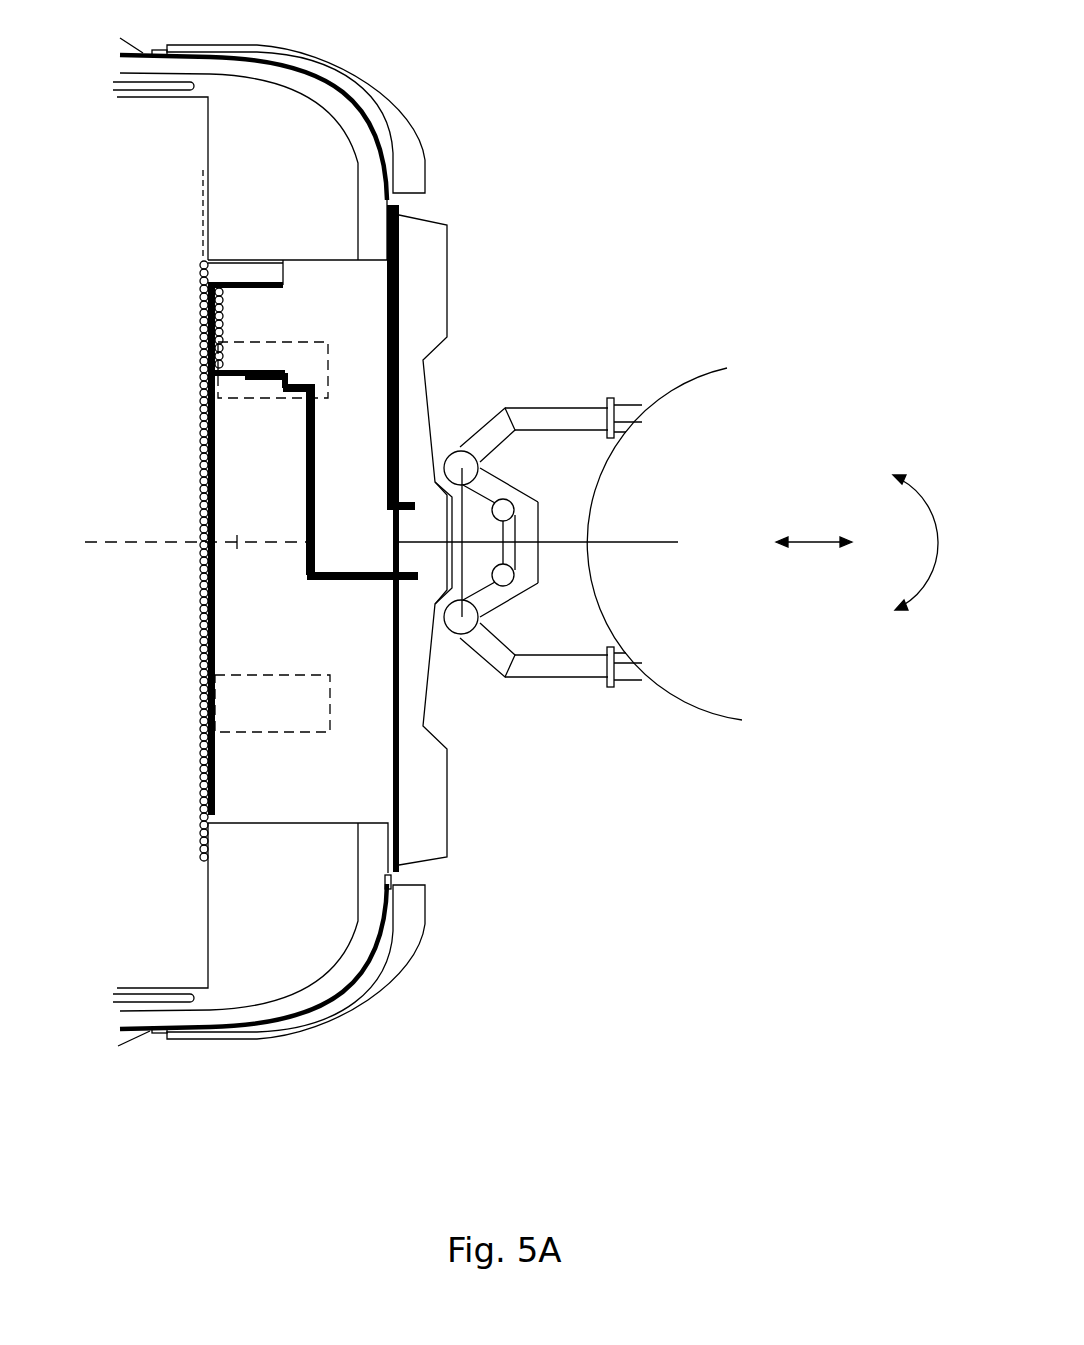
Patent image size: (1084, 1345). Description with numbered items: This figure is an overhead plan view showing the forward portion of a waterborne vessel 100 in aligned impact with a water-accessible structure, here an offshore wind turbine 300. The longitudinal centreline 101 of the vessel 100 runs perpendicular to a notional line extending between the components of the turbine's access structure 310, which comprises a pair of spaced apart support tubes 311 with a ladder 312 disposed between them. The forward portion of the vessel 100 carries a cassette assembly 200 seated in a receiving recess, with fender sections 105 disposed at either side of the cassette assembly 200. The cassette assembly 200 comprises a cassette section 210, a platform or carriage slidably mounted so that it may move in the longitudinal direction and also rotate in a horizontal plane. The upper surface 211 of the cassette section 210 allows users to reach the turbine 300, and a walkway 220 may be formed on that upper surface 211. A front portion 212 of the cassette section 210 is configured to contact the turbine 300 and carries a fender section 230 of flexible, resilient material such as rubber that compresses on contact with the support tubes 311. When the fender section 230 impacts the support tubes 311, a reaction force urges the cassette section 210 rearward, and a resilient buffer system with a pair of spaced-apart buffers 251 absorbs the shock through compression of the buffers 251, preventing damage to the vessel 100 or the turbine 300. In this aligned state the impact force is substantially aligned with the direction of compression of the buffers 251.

The waterborne vessel 100 is at (478, 200).
The fender sections 105 is at (393, 118).
The longitudinal centreline 101 is at (648, 543).
The cassette assembly 200 is at (497, 884).
The cassette section 210 is at (407, 873).
The upper surface 211 is at (287, 778).
The front portion 212 is at (392, 812).
The walkway 220 is at (348, 485).
The fender section 230 is at (413, 710).
The buffers 251 is at (250, 352).
The offshore wind turbine 300 is at (722, 472).
The access structure 310 is at (702, 323).
The support tubes 311 is at (490, 428).
The ladder 312 is at (537, 578).